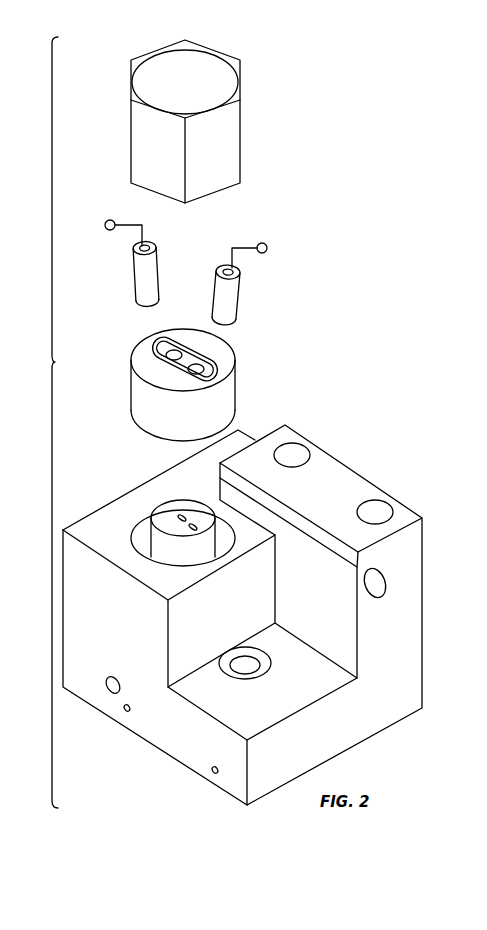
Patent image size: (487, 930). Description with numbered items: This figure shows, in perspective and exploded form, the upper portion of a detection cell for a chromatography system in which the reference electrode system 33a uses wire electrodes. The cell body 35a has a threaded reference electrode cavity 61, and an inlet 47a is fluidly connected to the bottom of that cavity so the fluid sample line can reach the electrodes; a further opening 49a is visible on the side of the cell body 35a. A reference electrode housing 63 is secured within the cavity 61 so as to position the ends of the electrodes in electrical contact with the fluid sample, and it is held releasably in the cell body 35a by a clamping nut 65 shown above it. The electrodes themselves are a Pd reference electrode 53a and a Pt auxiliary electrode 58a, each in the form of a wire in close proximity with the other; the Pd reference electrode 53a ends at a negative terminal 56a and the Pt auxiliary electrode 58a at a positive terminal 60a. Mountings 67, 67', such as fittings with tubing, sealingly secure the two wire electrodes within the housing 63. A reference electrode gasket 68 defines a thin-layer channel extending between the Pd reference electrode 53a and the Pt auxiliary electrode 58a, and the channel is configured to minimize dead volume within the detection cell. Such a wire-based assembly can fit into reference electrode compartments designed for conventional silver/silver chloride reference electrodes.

The electrode assembly 33a is at (71, 422).
The clamping nut 65 is at (243, 80).
The Pt auxiliary electrode 58a is at (142, 220).
The positive terminal 60a is at (110, 232).
The Pd reference electrode 53a is at (232, 241).
The negative terminal 56a is at (262, 242).
The mounting 67' is at (119, 279).
The mounting 67 is at (250, 295).
The reference electrode housing 63 is at (130, 376).
The cell body 35a is at (357, 731).
The threaded reference electrode cavity 61 is at (150, 535).
The reference electrode gasket 68 is at (188, 512).
The side hole 49a is at (110, 690).
The inlet 47a is at (243, 667).